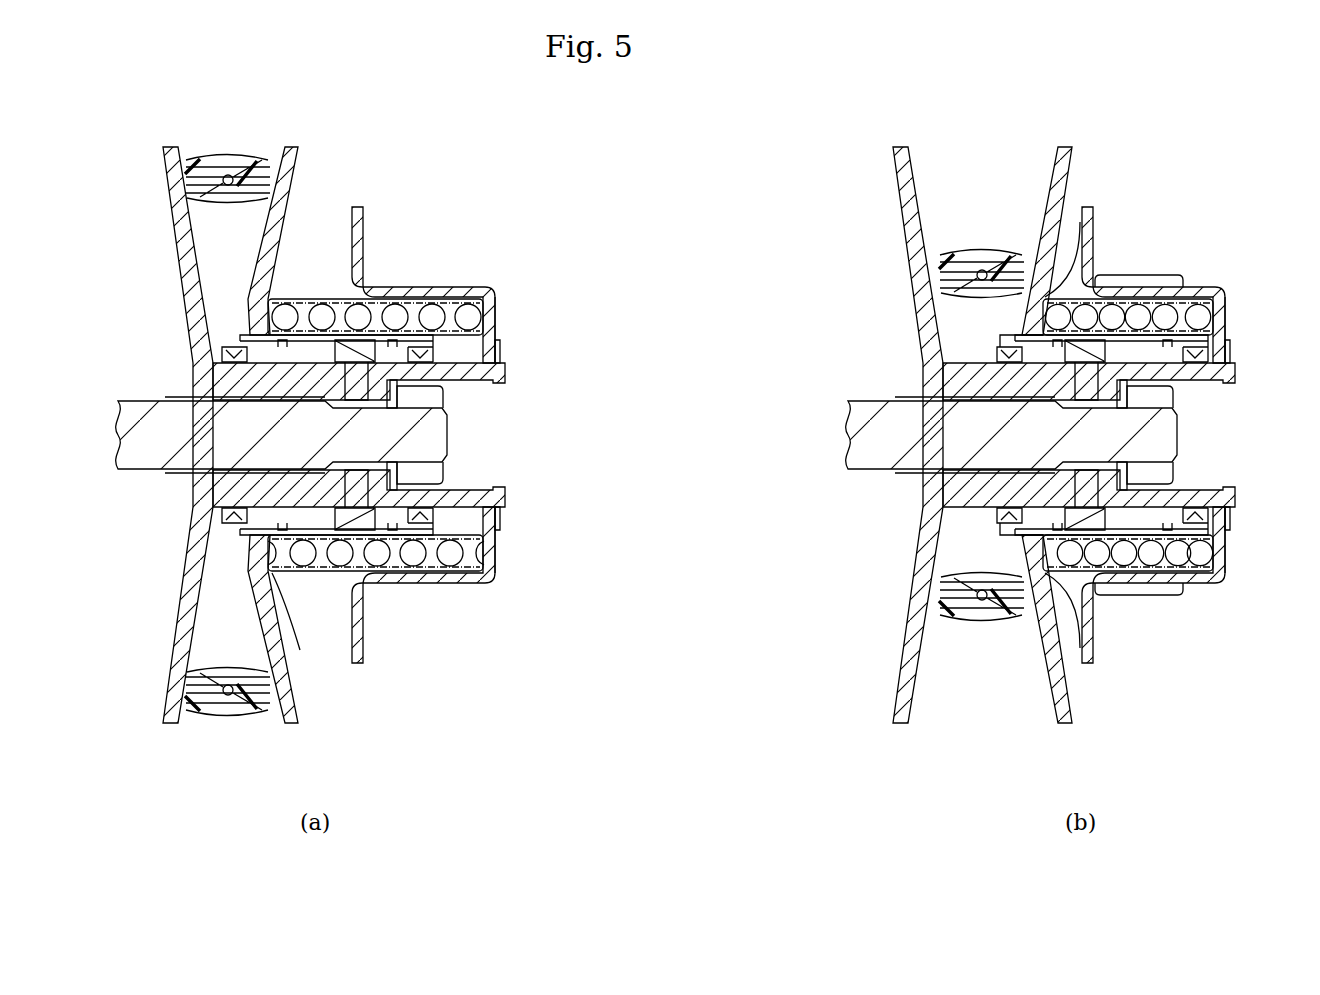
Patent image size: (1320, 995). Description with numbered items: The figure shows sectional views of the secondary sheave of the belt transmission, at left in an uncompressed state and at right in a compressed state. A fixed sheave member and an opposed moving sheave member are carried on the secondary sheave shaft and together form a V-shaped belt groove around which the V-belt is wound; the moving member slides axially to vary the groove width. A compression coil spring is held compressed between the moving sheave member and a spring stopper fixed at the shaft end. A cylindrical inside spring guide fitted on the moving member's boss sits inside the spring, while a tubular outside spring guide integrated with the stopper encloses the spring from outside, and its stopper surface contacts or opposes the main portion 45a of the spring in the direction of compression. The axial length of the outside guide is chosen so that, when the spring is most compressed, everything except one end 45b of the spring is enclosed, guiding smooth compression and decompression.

The main portion 45a is at (1146, 277).
The one end of spring 45b is at (1078, 230).